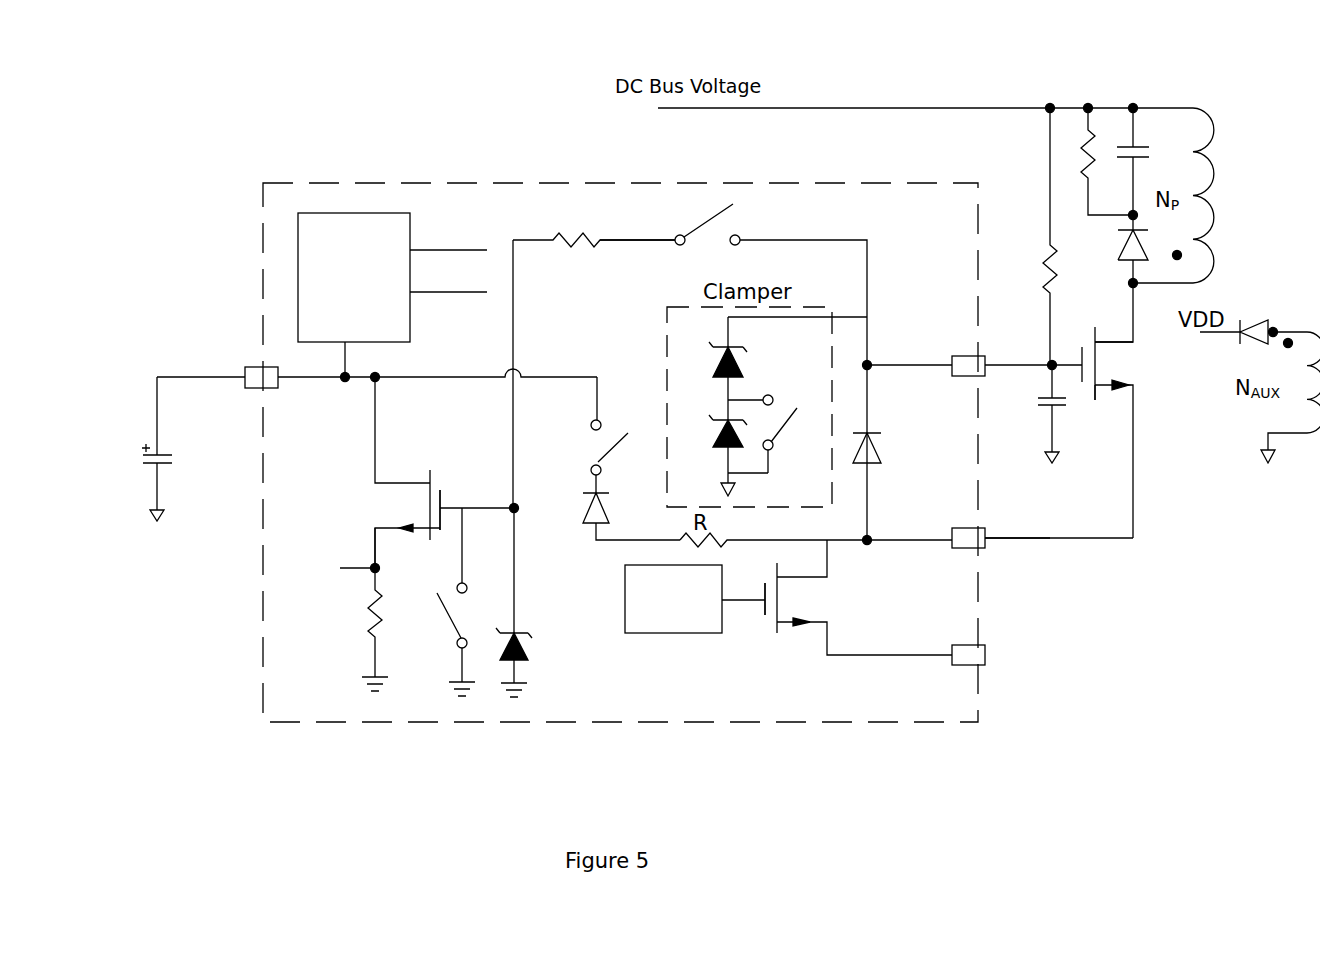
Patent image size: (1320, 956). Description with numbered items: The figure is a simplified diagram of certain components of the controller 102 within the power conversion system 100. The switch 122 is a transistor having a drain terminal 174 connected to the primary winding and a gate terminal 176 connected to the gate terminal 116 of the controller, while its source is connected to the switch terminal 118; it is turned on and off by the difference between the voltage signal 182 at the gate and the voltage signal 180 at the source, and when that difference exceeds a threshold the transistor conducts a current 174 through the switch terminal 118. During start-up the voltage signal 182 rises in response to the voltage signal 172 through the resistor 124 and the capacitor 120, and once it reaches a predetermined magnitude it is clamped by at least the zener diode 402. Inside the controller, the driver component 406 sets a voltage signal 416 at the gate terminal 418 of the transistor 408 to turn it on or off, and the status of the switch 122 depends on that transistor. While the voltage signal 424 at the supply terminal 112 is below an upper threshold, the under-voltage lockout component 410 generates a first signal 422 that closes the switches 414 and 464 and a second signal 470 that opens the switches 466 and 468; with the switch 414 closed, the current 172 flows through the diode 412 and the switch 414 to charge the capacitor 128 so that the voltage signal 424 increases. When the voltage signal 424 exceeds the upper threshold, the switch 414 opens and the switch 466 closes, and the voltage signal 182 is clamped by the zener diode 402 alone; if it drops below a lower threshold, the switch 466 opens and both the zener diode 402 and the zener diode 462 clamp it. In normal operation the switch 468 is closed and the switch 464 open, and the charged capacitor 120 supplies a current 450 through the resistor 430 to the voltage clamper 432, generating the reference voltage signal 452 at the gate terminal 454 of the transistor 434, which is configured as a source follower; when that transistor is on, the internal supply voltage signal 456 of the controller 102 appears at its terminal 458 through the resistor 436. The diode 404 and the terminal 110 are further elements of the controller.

The power conversion system 100 is at (1112, 728).
The controller 102 is at (267, 722).
The terminal 110 is at (985, 648).
The terminal VDD 112 is at (247, 367).
The terminal GATE 116 is at (952, 356).
The terminal SW 118 is at (985, 548).
The capacitor 120 is at (1040, 405).
The switch 122 is at (1133, 370).
The resistor 124 is at (1052, 265).
The capacitor 128 is at (165, 466).
The voltage signal 172 is at (876, 106).
The drain terminal 174 is at (1135, 534).
The gate terminal 176 is at (1096, 401).
The voltage signal 180 is at (1093, 540).
The voltage signal 182 is at (1060, 360).
The zener diode 402 is at (741, 362).
The diode 404 is at (880, 460).
The driver component 406 is at (663, 633).
The transistor 408 is at (780, 633).
The under-voltage lockout (UVLO) component 410 is at (365, 342).
The diode 412 is at (608, 515).
The switch 414 is at (589, 441).
The voltage signal 416 is at (733, 602).
The gate terminal 418 is at (764, 594).
The signal porB 422 is at (443, 296).
The voltage signal 424 is at (293, 379).
The resistor 430 is at (590, 247).
The voltage clamper 432 is at (529, 665).
The transistor 434 is at (430, 473).
The resistor 436 is at (375, 638).
The current 450 is at (645, 240).
The reference voltage signal 452 is at (517, 513).
The gate terminal 454 is at (442, 532).
The voltage signal AVDD 456 is at (360, 566).
The terminal 458 is at (378, 553).
The zener diode 462 is at (717, 447).
The switch 464 is at (467, 645).
The switch 466 is at (773, 450).
The switch 468 is at (688, 245).
The signal por 470 is at (428, 246).